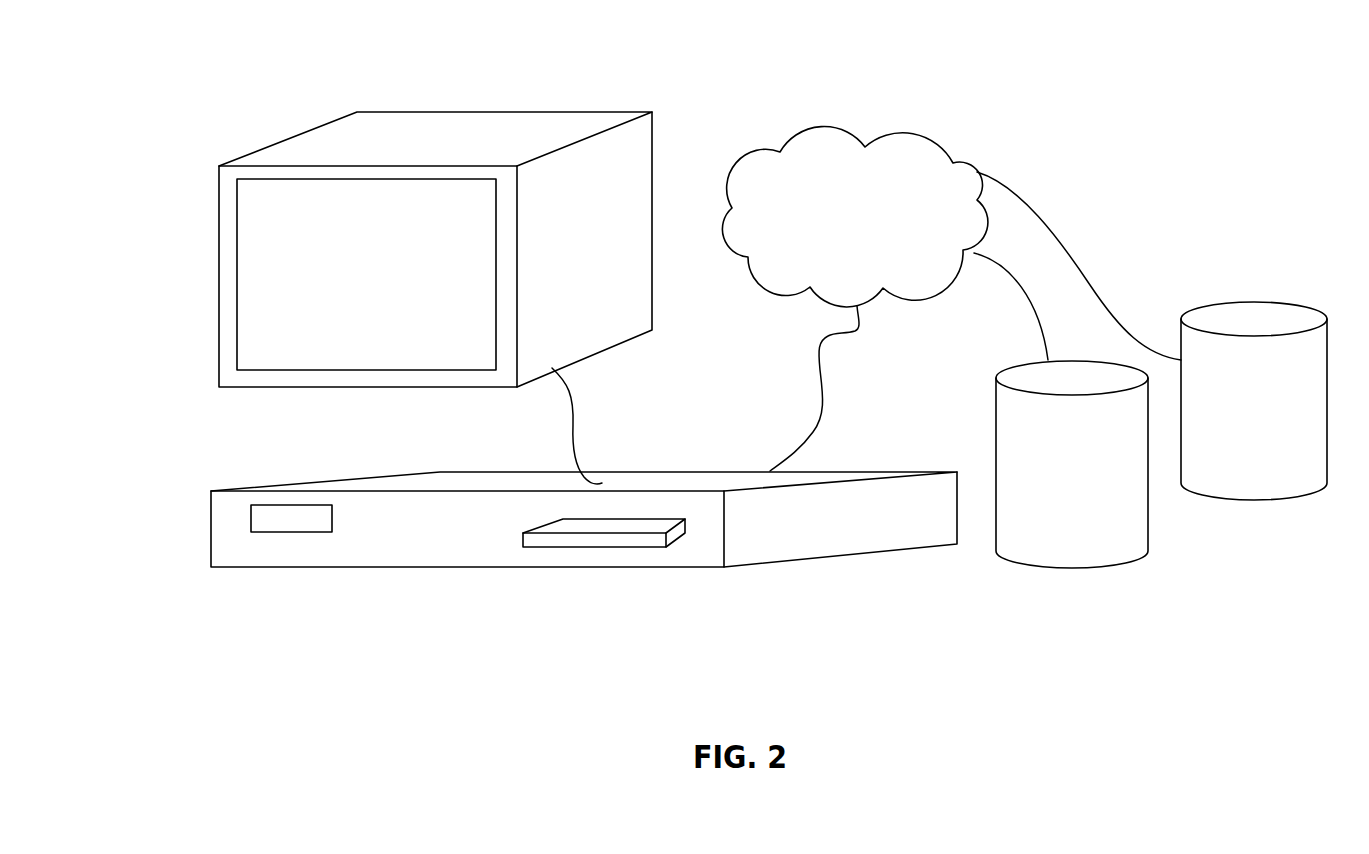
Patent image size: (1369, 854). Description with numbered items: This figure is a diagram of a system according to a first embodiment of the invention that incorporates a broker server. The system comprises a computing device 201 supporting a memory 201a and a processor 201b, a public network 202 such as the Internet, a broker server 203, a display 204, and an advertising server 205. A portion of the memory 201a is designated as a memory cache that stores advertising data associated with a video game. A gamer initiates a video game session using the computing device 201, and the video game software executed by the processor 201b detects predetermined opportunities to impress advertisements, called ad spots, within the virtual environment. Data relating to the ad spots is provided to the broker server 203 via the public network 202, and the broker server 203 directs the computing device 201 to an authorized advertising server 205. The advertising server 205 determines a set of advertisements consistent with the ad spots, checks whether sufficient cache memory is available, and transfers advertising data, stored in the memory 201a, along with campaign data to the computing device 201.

The computing device 201 is at (362, 567).
The memory 201a is at (270, 505).
The processor 201b is at (610, 547).
The public network 202 is at (832, 128).
The broker server 203 is at (1075, 563).
The display 204 is at (557, 108).
The advertising server 205 is at (1256, 495).